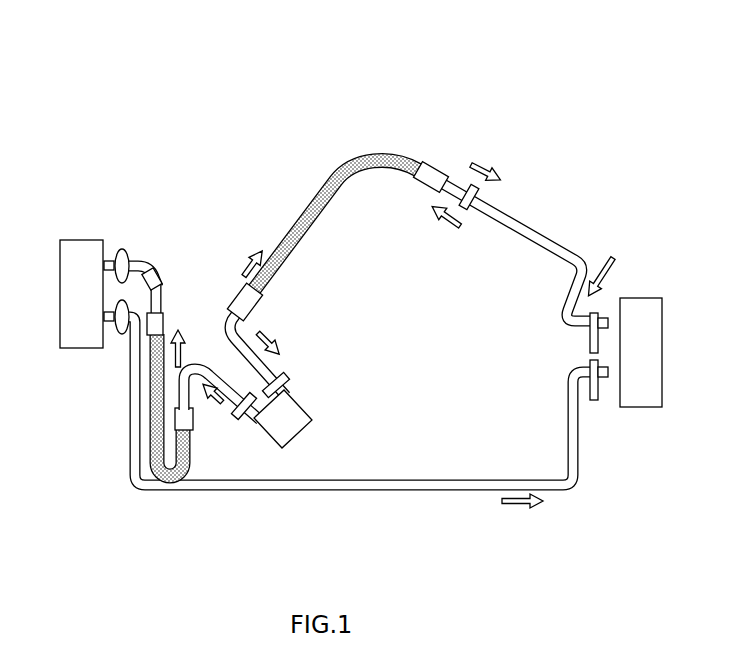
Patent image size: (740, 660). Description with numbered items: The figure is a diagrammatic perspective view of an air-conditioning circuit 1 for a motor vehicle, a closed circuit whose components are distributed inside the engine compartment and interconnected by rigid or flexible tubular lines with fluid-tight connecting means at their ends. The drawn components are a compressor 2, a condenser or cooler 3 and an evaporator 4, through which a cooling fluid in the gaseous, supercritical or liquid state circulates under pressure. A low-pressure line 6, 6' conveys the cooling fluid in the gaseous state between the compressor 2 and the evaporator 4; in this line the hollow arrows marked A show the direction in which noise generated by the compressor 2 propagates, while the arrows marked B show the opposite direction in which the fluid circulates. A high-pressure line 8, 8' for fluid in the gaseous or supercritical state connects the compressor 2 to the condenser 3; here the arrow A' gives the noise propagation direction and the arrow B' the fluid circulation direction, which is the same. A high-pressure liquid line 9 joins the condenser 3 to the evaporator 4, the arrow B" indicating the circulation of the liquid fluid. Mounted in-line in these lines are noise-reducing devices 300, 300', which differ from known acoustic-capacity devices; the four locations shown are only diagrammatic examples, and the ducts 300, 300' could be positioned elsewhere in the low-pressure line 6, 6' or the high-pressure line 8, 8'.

The air-conditioning circuit 1 is at (338, 303).
The compressor 2 is at (283, 419).
The condenser 3 is at (87, 294).
The evaporator 4 is at (626, 352).
The low-pressure line 6 is at (329, 228).
The low-pressure line 6' is at (330, 374).
The high-pressure line 8 is at (154, 303).
The high-pressure line 8' is at (222, 457).
The high-pressure liquid line 9 is at (578, 496).
The noise-reducing device 300 is at (364, 168).
The noise-reducing device 300' is at (257, 234).